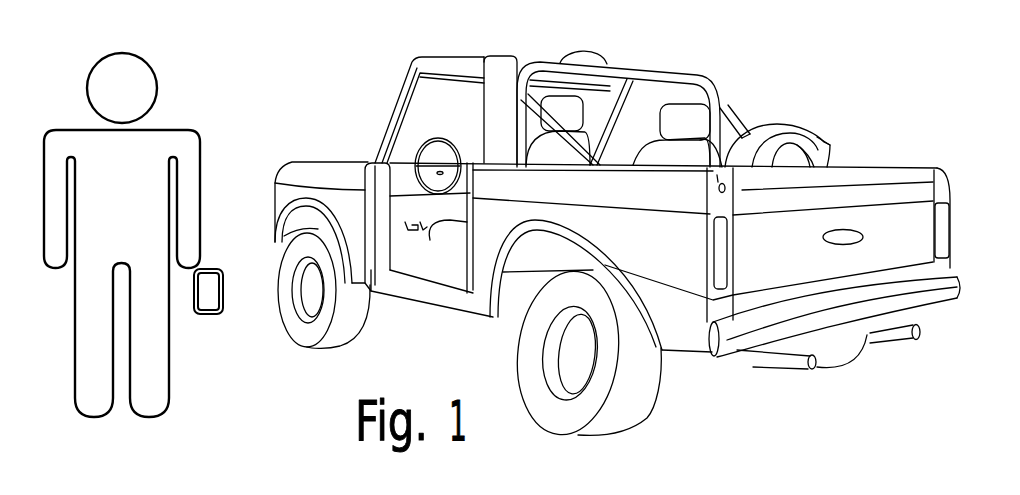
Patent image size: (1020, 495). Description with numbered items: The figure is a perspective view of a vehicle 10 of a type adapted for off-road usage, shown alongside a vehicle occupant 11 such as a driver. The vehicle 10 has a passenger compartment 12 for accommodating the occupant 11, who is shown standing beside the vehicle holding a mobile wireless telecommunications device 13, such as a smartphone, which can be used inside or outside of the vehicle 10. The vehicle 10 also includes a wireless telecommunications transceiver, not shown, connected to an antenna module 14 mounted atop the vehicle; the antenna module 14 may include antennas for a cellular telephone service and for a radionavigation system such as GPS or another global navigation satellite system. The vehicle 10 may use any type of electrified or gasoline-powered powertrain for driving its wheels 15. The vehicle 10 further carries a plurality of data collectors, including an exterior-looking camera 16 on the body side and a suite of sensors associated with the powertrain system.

The vehicle 10 is at (779, 72).
The occupant 11 is at (178, 101).
The passenger compartment 12 is at (452, 235).
The mobile wireless telecommunications device 13 is at (212, 268).
The antenna module 14 is at (603, 52).
The wheels 15 is at (290, 326).
The exterior-looking camera 16 is at (717, 187).